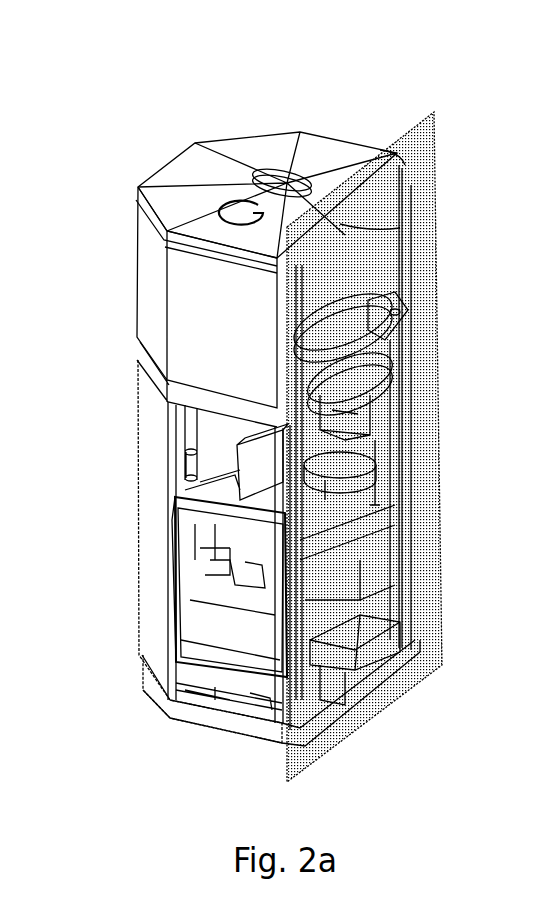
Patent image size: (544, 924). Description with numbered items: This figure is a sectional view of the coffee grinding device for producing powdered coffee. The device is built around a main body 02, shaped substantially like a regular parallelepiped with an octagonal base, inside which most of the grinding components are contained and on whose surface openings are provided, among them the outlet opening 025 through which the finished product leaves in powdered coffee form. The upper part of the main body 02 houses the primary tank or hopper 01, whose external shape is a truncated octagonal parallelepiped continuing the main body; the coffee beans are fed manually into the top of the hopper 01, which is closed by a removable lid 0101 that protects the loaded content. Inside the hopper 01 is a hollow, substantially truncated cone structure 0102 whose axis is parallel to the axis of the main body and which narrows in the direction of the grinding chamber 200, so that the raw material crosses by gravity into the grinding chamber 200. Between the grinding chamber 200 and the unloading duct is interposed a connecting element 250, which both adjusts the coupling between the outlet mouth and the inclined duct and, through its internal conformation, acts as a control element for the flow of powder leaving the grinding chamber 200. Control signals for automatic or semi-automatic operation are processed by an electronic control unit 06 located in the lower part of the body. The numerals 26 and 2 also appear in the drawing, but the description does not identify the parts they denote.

The removable lid 0101 is at (255, 152).
The truncated cone structure 0102 is at (350, 278).
The primary tank or hopper 01 is at (152, 318).
The main body 02 is at (146, 482).
The outlet opening 025 is at (165, 590).
The grinding chamber 200 is at (373, 353).
The electronic control unit 06 is at (370, 657).
The connecting element 250 is at (543, 334).
The component 26 is at (537, 274).
The component 2 is at (540, 242).